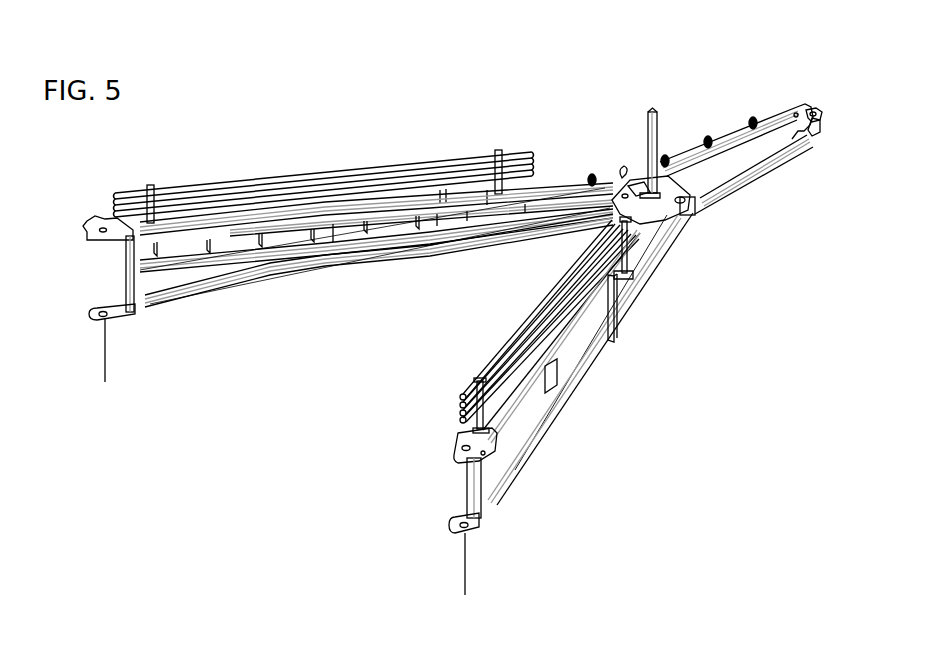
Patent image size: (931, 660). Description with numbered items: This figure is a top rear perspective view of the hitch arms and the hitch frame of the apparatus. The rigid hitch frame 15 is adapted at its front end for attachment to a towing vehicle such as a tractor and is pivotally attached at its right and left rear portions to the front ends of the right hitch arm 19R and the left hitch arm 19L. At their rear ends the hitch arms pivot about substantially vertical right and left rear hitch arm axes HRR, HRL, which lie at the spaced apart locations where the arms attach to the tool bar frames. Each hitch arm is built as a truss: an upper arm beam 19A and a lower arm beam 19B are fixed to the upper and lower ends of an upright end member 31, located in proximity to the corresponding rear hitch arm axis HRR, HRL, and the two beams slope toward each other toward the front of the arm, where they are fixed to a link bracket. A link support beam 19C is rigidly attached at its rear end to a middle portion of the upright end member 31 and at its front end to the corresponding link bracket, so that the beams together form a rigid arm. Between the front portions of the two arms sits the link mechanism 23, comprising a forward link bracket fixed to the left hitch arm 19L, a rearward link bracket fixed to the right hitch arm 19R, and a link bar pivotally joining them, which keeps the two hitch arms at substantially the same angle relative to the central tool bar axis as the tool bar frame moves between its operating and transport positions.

The hitch frame 15 is at (750, 175).
The left hitch arm 19L is at (547, 182).
The right hitch arm 19R is at (622, 306).
The upper arm beam 19A is at (228, 240).
The lower arm beam 19B is at (153, 308).
The link support beam 19C is at (185, 270).
The link mechanism 23 is at (613, 220).
The upright end member 31 is at (124, 290).
The left rear hitch arm axis HRL is at (105, 368).
The right rear hitch arm axis HRR is at (465, 584).